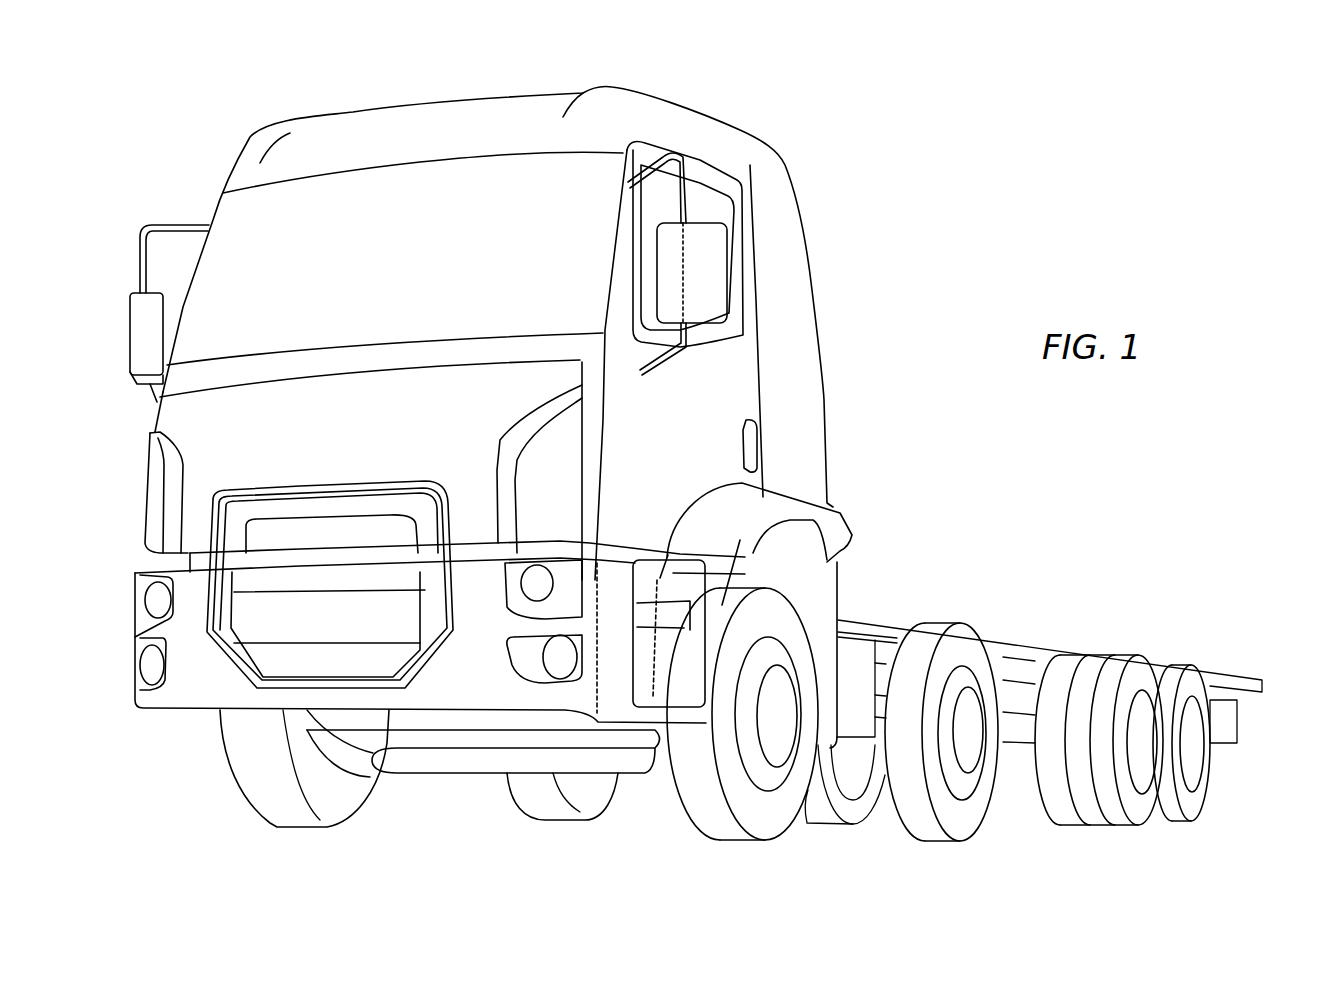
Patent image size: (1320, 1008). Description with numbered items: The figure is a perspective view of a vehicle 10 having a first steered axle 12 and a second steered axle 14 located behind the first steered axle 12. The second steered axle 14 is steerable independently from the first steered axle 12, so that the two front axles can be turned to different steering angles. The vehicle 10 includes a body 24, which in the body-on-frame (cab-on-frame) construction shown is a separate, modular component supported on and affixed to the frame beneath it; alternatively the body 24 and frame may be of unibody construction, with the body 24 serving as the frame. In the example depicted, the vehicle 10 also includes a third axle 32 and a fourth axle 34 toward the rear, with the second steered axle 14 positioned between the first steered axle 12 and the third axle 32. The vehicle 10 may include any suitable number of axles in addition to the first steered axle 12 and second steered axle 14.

The vehicle 10 is at (889, 130).
The first steered axle 12 is at (780, 842).
The second steered axle 14 is at (970, 844).
The body 24 is at (405, 107).
The third axle 32 is at (1117, 831).
The fourth axle 34 is at (1206, 820).